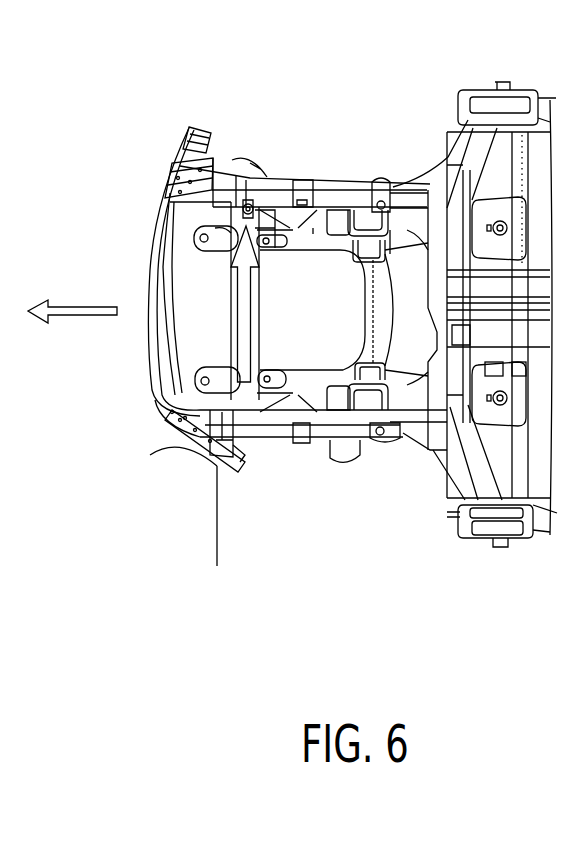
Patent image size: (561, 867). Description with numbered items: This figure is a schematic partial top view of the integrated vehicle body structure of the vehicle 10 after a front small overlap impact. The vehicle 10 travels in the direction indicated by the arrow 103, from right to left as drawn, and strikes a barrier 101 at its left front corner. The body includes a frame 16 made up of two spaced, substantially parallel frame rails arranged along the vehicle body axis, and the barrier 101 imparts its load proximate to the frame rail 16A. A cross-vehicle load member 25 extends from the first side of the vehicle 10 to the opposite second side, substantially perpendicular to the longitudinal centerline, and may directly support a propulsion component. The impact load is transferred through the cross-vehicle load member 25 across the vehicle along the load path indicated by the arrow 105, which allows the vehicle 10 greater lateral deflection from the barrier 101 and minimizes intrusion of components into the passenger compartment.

The vehicle 10 is at (376, 84).
The frame 16 is at (376, 474).
The frame rail 16A is at (236, 448).
The cross-vehicle load member 25 is at (231, 306).
The barrier 101 is at (218, 540).
The arrow 103 is at (71, 318).
The arrow 105 is at (232, 347).